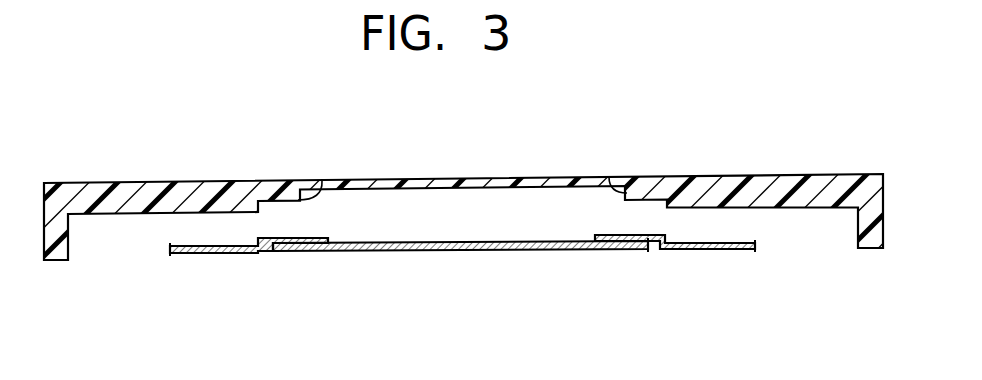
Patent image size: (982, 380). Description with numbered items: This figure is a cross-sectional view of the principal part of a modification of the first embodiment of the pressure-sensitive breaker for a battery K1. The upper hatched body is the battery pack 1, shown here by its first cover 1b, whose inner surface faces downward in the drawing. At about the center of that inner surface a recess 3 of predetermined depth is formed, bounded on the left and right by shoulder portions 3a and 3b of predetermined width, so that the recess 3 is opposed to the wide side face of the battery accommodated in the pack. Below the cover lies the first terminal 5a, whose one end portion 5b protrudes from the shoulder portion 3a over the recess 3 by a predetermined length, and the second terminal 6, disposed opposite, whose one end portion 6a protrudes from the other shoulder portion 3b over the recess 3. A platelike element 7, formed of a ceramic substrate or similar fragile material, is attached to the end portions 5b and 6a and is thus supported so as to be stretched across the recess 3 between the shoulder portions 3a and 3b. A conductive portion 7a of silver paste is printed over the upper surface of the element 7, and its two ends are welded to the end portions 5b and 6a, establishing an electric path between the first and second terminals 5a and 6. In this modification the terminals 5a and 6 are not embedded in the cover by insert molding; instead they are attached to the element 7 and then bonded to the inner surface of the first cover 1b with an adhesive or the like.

The pressure-sensitive breaker for a battery K1 is at (83, 181).
The battery pack 1 is at (166, 181).
The first cover 1b is at (770, 175).
The recess 3 is at (404, 213).
The shoulder portion 3a is at (320, 181).
The shoulder portion 3b is at (609, 177).
The first terminal 5a is at (225, 255).
The end portion of the first terminal 5b is at (313, 240).
The platelike element 7 is at (424, 253).
The conductive portion 7a is at (480, 241).
The second terminal 6 is at (726, 252).
The end portion of the second terminal 6a is at (612, 237).